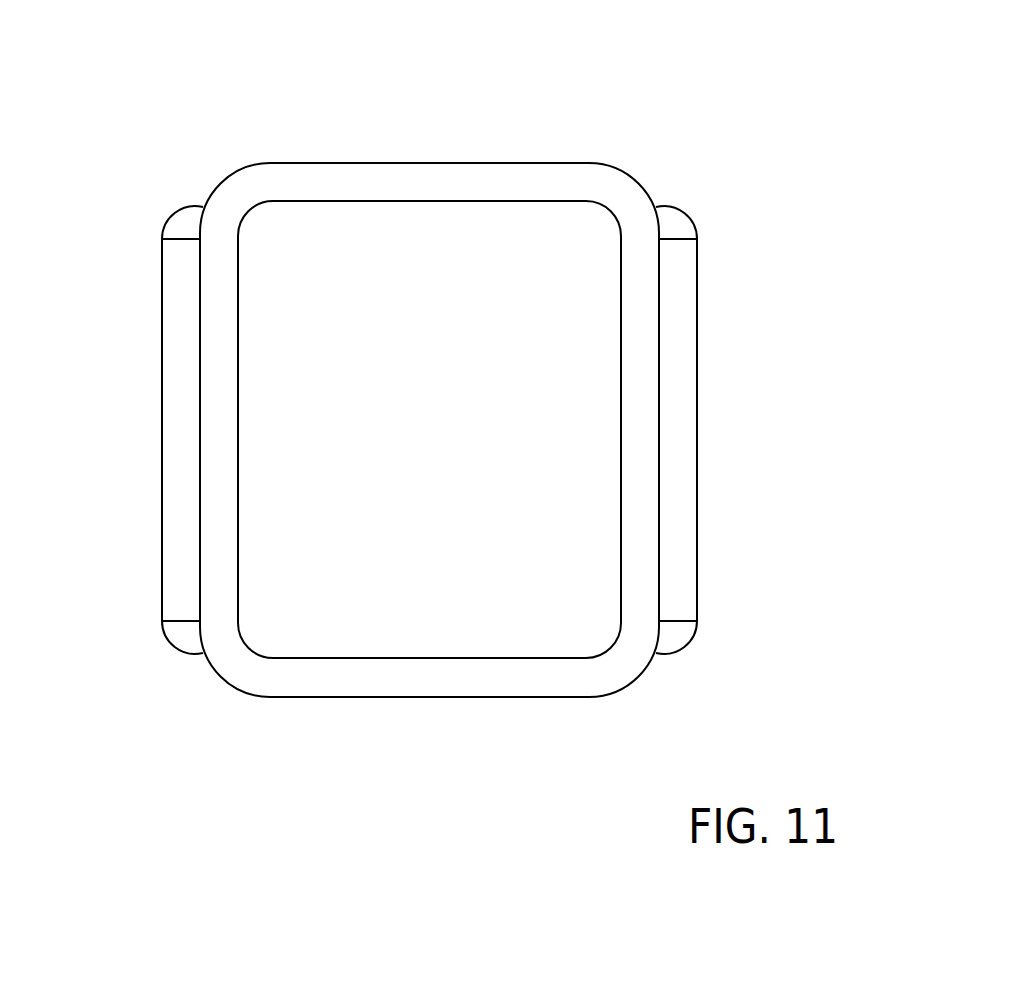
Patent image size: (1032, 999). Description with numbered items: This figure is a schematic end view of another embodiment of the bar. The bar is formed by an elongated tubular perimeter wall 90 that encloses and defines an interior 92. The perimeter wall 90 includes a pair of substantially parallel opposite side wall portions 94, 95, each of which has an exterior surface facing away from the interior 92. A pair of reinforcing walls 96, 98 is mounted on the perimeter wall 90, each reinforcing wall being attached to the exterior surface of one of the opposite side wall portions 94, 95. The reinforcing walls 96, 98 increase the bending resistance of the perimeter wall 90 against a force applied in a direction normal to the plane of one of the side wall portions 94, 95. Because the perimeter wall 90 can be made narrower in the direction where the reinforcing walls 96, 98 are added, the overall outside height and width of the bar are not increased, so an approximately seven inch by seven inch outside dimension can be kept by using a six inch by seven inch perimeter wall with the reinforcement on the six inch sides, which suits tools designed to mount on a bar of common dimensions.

The perimeter wall 90 is at (482, 183).
The interior 92 is at (330, 247).
The side wall portion 94 is at (223, 449).
The side wall portion 95 is at (638, 462).
The reinforcing wall 96 is at (182, 468).
The reinforcing wall 98 is at (675, 463).